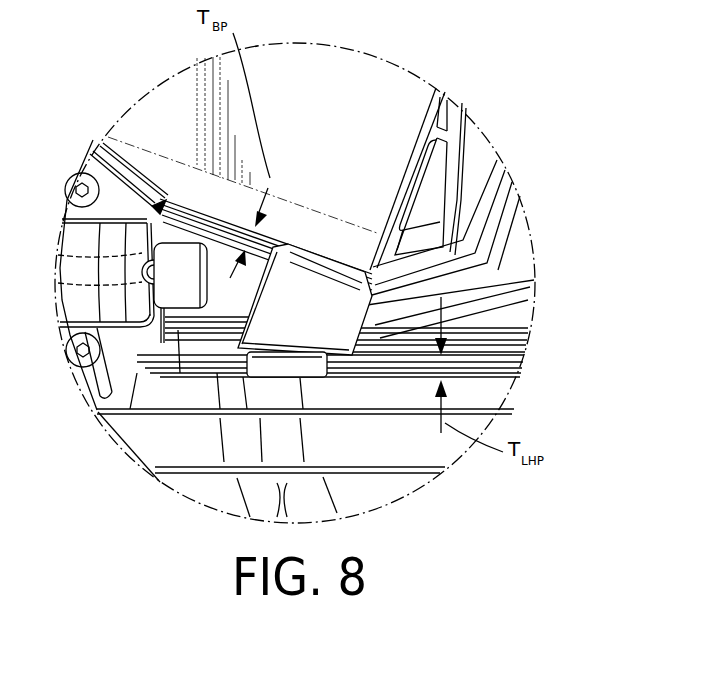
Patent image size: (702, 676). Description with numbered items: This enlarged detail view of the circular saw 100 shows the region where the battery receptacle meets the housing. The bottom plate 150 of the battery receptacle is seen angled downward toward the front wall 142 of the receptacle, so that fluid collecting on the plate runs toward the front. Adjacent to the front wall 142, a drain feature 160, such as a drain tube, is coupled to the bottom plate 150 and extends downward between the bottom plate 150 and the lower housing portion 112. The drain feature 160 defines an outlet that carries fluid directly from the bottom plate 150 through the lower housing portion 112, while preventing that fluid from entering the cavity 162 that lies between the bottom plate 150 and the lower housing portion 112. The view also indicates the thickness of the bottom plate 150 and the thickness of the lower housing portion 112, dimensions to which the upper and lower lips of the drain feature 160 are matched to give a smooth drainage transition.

The circular saw 100 is at (128, 68).
The lower housing portion 112 is at (125, 301).
The front wall 142 is at (413, 147).
The bottom plate 150 is at (180, 205).
The drain feature 160 is at (330, 335).
The cavity 162 is at (187, 430).